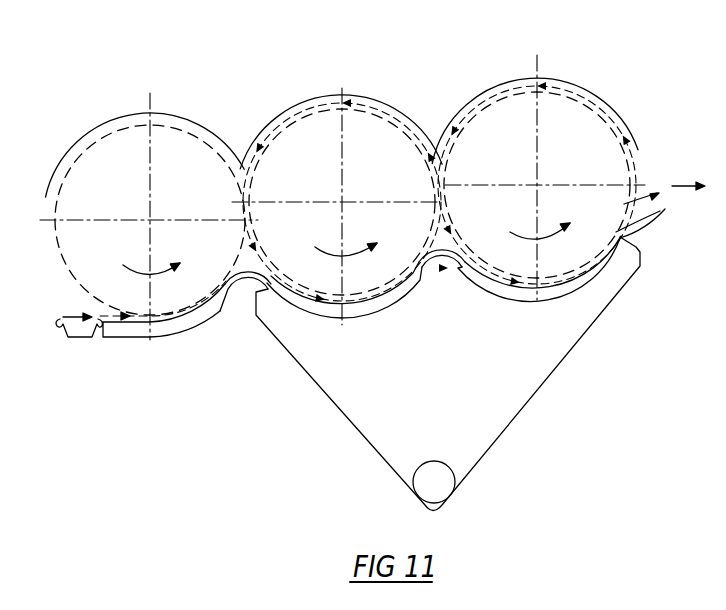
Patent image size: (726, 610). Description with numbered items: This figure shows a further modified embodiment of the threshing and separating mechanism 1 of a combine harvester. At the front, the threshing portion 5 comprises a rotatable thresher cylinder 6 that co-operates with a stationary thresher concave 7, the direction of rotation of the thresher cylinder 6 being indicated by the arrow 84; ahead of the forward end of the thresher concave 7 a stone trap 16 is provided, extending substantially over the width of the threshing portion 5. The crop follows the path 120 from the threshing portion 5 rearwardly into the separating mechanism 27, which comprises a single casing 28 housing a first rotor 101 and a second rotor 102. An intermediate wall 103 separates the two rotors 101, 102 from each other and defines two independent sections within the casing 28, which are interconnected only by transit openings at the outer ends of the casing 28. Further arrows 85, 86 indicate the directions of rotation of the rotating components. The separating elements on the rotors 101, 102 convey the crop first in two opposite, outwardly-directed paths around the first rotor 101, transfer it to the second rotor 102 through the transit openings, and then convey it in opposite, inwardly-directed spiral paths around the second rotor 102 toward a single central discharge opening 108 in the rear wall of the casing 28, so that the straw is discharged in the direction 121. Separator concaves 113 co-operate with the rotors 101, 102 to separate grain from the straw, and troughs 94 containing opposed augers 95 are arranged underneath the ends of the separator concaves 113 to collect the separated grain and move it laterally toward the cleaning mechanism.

The mechanism 1 is at (428, 374).
The threshing portion 5 is at (163, 100).
The thresher cylinder 6 is at (92, 145).
The thresher concave 7 is at (148, 340).
The stone trap 16 is at (78, 340).
The separating mechanism 27 is at (471, 95).
The casing 28 is at (551, 80).
The arrow indicating direction of rotation of the threshing cylinder 84 is at (149, 275).
The rotation direction of second cylinder 85 is at (342, 255).
The arrow indicating direction of rotation 86 is at (537, 236).
The trough 94 is at (327, 401).
The auger 95 is at (435, 462).
The first rotor 101 is at (357, 110).
The second rotor 102 is at (617, 138).
The intermediate wall 103 is at (453, 137).
The discharge opening 108 is at (637, 228).
The separator concave 113 is at (368, 313).
The path 120 is at (73, 312).
The discharge direction 121 is at (674, 186).